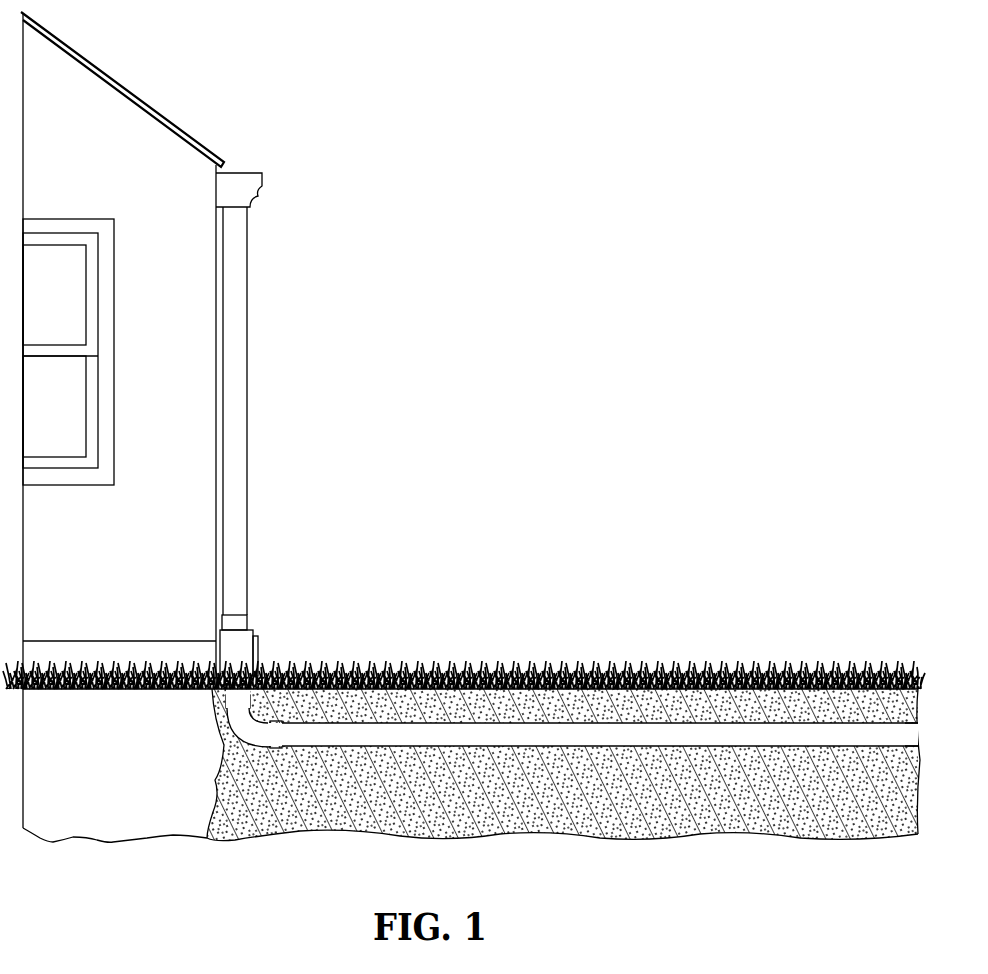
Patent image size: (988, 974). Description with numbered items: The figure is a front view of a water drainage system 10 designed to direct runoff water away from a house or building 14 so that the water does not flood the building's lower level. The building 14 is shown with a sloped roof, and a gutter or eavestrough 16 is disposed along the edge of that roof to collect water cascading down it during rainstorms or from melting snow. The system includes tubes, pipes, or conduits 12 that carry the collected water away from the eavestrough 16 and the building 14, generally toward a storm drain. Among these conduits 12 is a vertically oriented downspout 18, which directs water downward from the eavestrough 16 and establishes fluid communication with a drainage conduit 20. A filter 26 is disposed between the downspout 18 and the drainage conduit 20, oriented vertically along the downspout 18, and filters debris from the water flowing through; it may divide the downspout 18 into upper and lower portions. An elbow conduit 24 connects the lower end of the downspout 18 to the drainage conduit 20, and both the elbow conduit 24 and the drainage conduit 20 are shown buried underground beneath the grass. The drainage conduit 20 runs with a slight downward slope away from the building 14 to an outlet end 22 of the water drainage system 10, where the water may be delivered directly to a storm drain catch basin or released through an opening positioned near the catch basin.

The water drainage system 10 is at (471, 491).
The conduits 12 is at (279, 418).
The building 14 is at (121, 99).
The eavestrough 16 is at (262, 193).
The downspout 18 is at (248, 418).
The drainage conduit 20 is at (641, 738).
The outlet end 22 is at (893, 736).
The elbow conduit 24 is at (247, 724).
The filter 26 is at (242, 656).